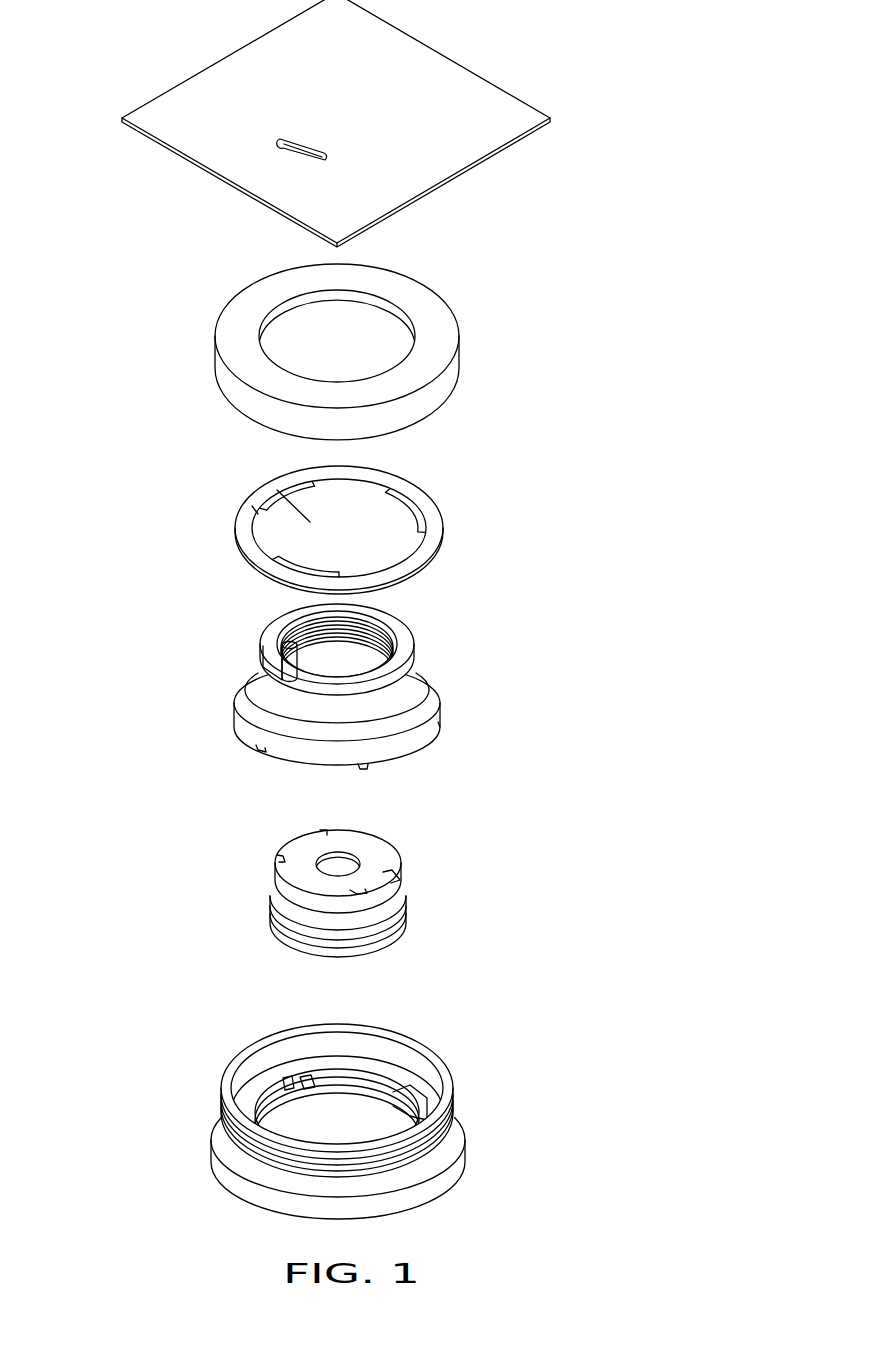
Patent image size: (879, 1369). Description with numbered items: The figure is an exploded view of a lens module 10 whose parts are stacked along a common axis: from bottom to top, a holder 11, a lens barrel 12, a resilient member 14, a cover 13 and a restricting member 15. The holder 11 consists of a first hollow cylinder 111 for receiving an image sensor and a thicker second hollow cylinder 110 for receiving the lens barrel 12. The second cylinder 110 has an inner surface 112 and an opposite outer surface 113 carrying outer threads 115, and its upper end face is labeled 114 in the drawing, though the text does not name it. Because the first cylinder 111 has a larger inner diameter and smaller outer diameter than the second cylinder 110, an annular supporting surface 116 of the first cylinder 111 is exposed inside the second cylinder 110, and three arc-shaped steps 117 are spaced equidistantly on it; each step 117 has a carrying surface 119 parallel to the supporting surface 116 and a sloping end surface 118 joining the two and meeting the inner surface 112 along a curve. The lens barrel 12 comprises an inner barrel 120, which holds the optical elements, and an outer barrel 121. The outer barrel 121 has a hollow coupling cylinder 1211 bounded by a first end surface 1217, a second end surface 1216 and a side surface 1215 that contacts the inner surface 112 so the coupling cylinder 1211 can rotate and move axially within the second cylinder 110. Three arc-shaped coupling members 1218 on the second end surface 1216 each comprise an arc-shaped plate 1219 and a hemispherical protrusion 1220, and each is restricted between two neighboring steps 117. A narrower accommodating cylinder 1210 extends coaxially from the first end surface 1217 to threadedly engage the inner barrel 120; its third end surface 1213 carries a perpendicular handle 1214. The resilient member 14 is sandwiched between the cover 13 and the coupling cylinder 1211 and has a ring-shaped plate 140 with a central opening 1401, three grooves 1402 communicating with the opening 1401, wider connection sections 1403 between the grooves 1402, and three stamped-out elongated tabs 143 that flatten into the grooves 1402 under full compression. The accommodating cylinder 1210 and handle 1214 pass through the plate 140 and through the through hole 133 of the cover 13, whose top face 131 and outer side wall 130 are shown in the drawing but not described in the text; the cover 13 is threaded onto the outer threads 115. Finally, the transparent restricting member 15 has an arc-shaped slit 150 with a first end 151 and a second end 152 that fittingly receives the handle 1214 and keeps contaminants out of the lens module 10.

The lens module 10 is at (133, 44).
The restricting member 15 is at (447, 80).
The arc-shaped slit 150 is at (172, 176).
The first end 151 is at (279, 142).
The second end 152 is at (307, 160).
The cover 13 is at (527, 303).
The top surface of spacer ring 131 is at (435, 323).
The through hole 133 is at (358, 330).
The side wall of spacer ring 130 is at (450, 370).
The resilient member 14 is at (519, 478).
The ring-shaped plate 140 is at (413, 558).
The elongated tabs 143 is at (407, 495).
The opening 1401 is at (273, 486).
The grooves 1402 is at (252, 510).
The connection section 1403 is at (252, 540).
The lens barrel 12 is at (568, 665).
The outer barrel 121 is at (514, 650).
The accommodating cylinder 1210 is at (410, 675).
The coupling cylinder 1211 is at (435, 707).
The third end surface 1213 is at (270, 643).
The handle 1214 is at (283, 663).
The first end surface 1217 is at (257, 702).
The side surface 1215 is at (257, 732).
The second end surface 1216 is at (274, 765).
The arc-shaped plate 1219 is at (380, 778).
The hemispherical protrusion 1220 is at (434, 740).
The inner barrel 120 is at (385, 863).
The coupling members 1218 is at (362, 859).
The holder 11 is at (535, 1078).
The second hollow cylinder 110 is at (452, 1095).
The first hollow cylinder 111 is at (457, 1157).
The inner surface 112 is at (270, 1057).
The outer surface 113 is at (225, 1080).
The top surface of base 114 is at (388, 1055).
The outer threads 115 is at (228, 1127).
The supporting surface 116 is at (332, 1082).
The arc-shaped steps 117 is at (352, 990).
The sloping end surface 118 is at (303, 1082).
The carrying surface 119 is at (283, 1085).